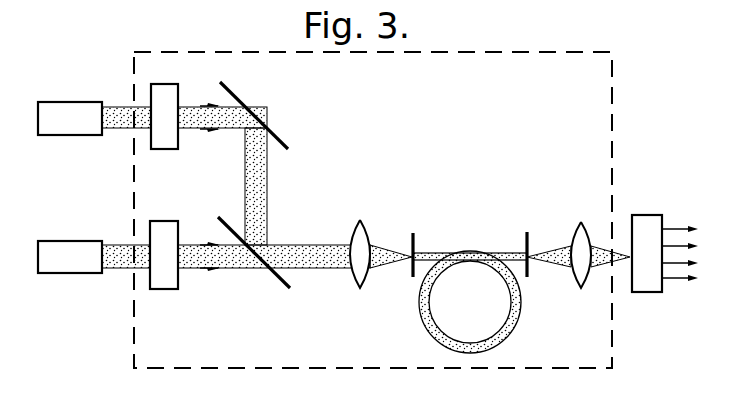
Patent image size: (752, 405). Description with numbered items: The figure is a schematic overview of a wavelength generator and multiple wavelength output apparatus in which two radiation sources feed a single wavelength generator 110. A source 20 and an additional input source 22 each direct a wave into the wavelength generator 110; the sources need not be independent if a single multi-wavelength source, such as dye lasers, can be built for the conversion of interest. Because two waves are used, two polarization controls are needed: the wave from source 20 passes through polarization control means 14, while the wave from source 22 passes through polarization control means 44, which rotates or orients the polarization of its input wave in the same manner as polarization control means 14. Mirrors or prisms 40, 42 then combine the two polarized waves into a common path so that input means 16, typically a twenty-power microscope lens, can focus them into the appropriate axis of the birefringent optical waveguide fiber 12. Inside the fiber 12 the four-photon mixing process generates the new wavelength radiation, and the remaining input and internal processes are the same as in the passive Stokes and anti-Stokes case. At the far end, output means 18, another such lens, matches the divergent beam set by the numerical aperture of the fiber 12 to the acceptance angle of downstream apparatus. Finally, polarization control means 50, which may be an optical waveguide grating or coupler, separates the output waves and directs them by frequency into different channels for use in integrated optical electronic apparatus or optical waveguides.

The wavelength generator 110 is at (603, 52).
The additional input source 22 is at (40, 135).
The source 20 is at (40, 273).
The polarization control means 44 is at (178, 149).
The polarization control means 14 is at (178, 289).
The mirror or prism 42 is at (283, 139).
The mirror or prism 40 is at (282, 280).
The input means 16 is at (360, 220).
The birefringent optical waveguide fiber 12 is at (462, 251).
The output means 18 is at (581, 288).
The polarization control means 50 is at (633, 215).